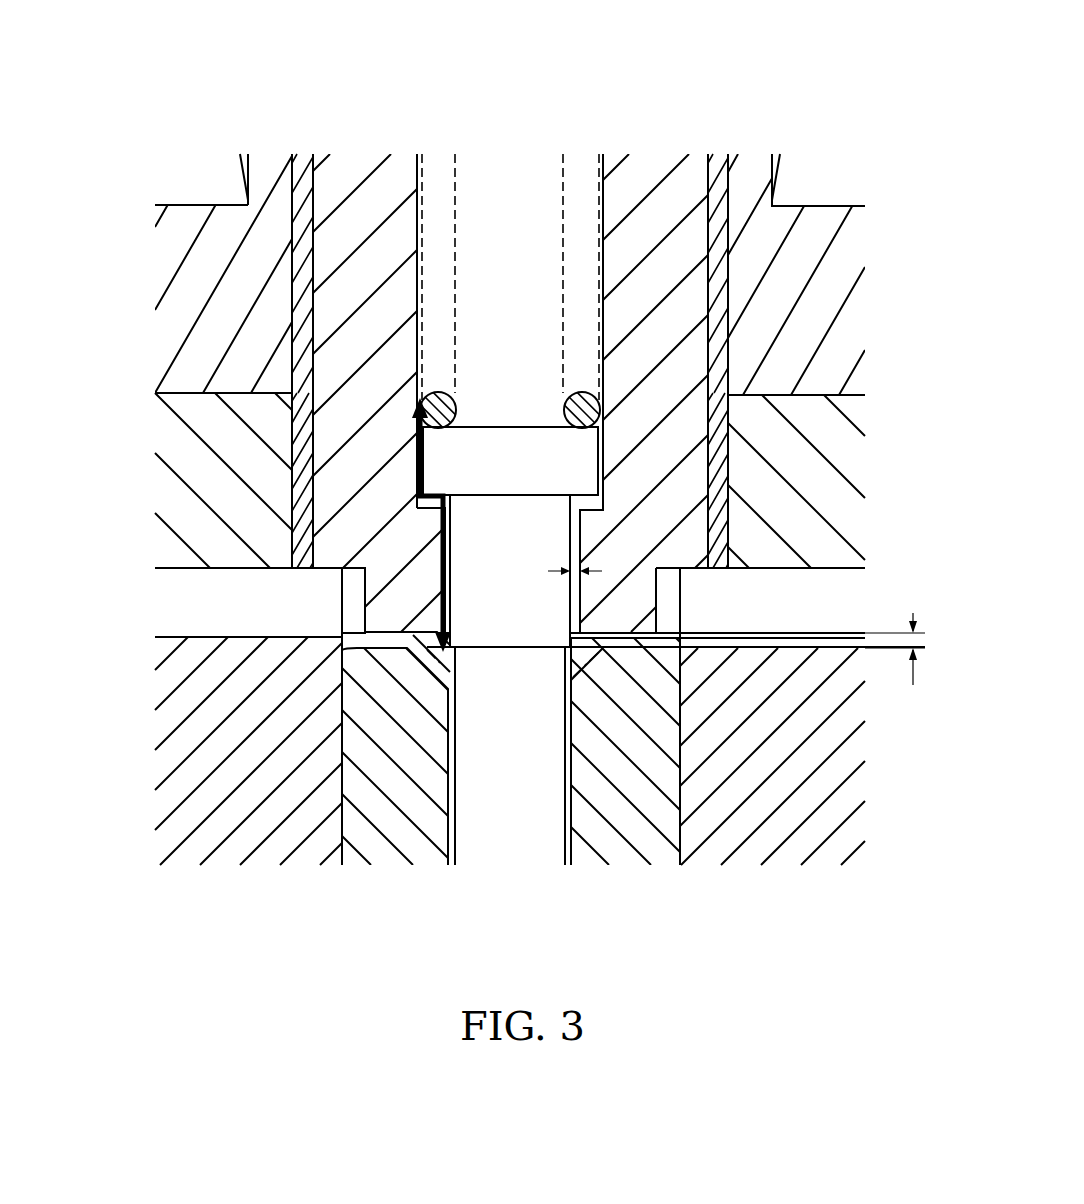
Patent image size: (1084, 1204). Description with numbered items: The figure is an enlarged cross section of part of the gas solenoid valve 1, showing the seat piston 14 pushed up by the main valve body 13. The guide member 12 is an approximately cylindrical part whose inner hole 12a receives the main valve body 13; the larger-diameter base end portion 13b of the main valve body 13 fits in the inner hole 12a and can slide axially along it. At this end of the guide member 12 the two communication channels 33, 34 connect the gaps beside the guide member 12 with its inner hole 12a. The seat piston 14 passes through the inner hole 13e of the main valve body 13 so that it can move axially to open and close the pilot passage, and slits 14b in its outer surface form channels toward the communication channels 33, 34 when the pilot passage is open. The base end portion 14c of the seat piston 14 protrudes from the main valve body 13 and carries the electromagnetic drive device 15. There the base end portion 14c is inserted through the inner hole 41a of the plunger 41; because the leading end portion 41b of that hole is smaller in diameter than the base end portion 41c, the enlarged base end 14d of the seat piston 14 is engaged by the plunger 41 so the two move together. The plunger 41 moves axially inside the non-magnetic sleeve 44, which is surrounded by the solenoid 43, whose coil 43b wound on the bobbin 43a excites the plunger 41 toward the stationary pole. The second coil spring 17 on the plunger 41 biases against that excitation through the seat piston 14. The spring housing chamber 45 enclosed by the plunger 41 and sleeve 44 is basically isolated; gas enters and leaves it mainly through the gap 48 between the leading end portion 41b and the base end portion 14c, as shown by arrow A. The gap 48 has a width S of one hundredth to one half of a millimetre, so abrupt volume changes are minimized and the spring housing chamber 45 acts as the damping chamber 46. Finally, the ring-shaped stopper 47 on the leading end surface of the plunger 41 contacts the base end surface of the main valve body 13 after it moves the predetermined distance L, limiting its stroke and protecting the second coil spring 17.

The gas solenoid valve 1 is at (893, 136).
The guide member 12 is at (510, 758).
The inner hole 12a is at (343, 814).
The main valve body 13 is at (553, 791).
The base end portion 13b is at (662, 814).
The inner hole 13e is at (450, 812).
The seat piston 14 is at (570, 671).
The slits 14b is at (448, 742).
The base end portion 14c is at (552, 608).
The base end 14d is at (587, 448).
The electromagnetic drive device 15 is at (805, 146).
The second coil spring 17 is at (604, 408).
The communication channel 33 is at (237, 614).
The communication channel 34 is at (768, 633).
The plunger 41 is at (302, 350).
The inner hole 41a is at (417, 318).
The leading end portion 41b is at (425, 580).
The base end portion 41c is at (420, 195).
The solenoid 43 is at (179, 349).
The bobbin 43a is at (195, 357).
The coil 43b is at (202, 176).
The sleeve 44 is at (714, 360).
The spring housing chamber 45 is at (581, 359).
The damping chamber 46 is at (603, 207).
The stopper 47 is at (372, 606).
The gap 48 is at (580, 537).
The arrow A is at (413, 447).
The width S is at (580, 563).
The predetermined distance L is at (913, 641).